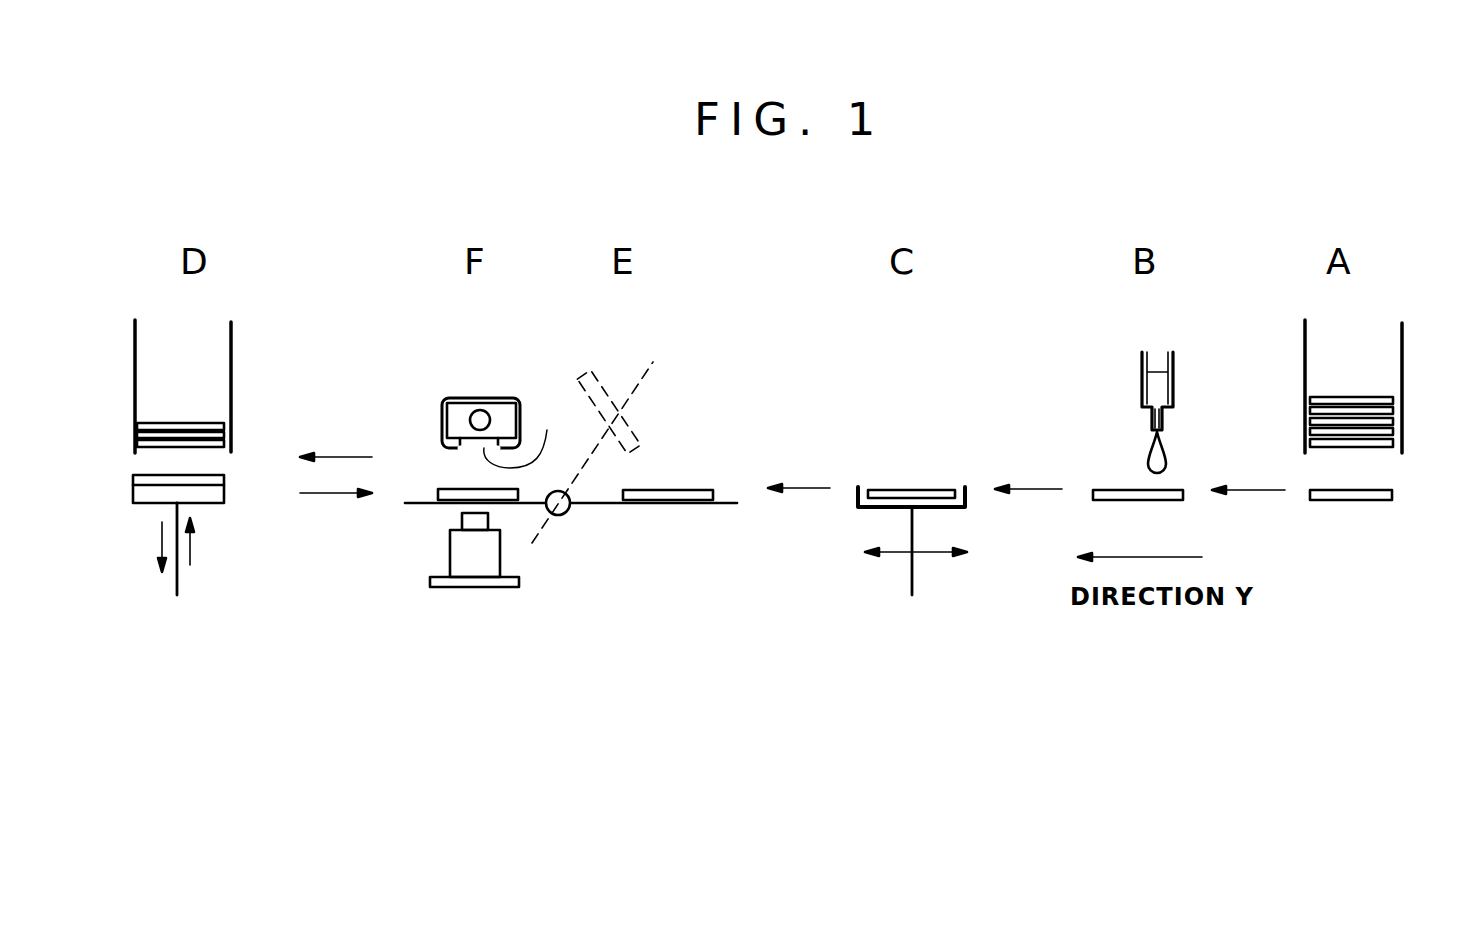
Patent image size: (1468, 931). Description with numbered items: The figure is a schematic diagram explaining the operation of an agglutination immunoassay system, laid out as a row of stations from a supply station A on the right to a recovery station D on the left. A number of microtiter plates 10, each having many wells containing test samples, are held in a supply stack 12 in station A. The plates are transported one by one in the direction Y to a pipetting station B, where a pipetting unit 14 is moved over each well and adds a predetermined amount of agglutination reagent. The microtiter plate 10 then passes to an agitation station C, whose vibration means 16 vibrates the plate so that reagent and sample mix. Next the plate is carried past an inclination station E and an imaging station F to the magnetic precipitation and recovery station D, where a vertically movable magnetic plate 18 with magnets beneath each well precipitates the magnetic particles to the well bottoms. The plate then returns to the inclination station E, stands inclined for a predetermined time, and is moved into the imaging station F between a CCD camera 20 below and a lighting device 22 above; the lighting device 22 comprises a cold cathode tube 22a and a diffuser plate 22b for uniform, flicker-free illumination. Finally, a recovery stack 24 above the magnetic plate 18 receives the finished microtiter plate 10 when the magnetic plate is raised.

The microtiter plate 10 is at (1326, 397).
The supply stack 12 is at (1402, 337).
The pipetting unit 14 is at (1142, 380).
The vibration means 16 is at (877, 507).
The magnetic plate 18 is at (213, 500).
The CCD camera 20 is at (450, 557).
The lighting device 22 is at (452, 398).
The cold cathode tube 22a is at (489, 411).
The diffuser plate 22b is at (539, 430).
The recovery stack 24 is at (231, 372).